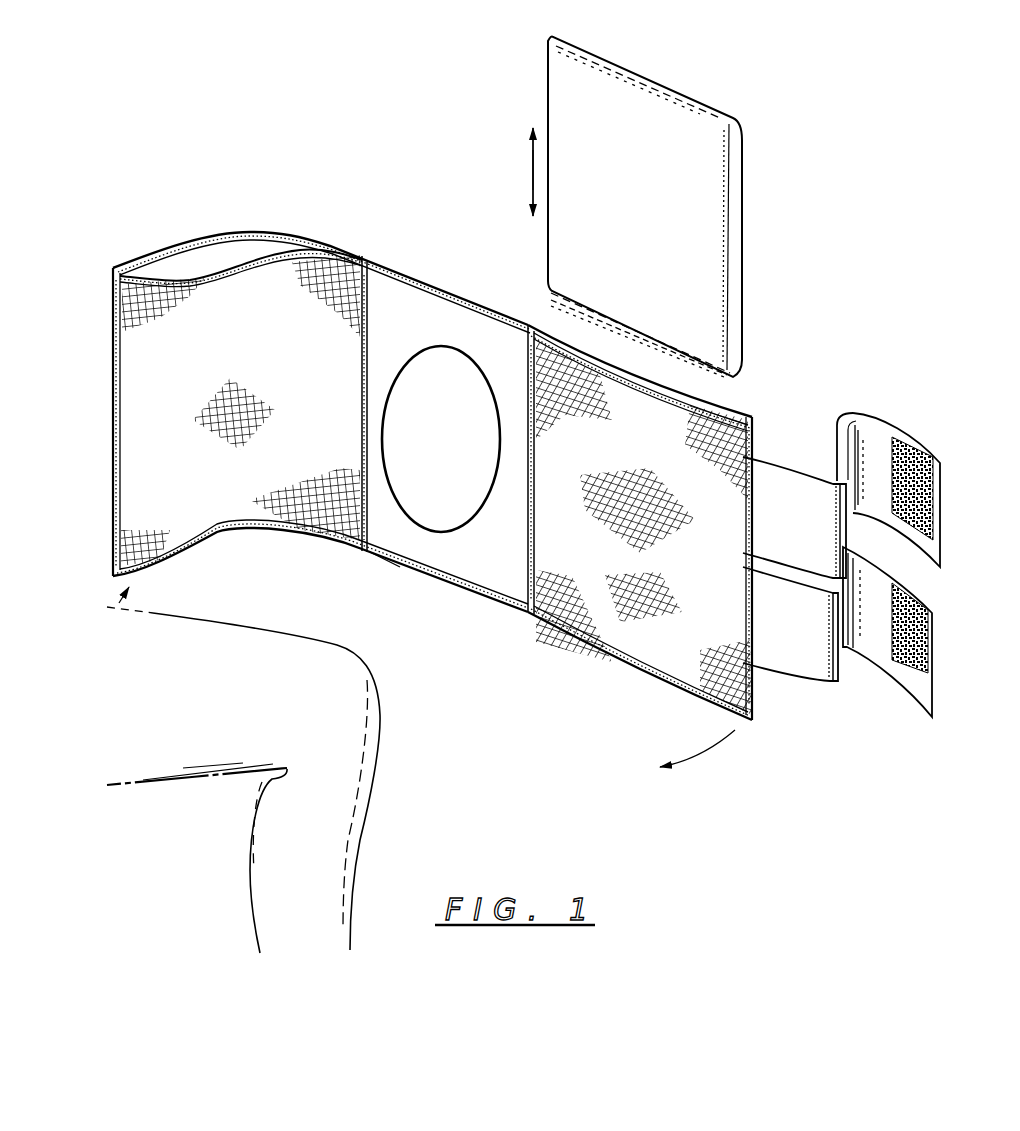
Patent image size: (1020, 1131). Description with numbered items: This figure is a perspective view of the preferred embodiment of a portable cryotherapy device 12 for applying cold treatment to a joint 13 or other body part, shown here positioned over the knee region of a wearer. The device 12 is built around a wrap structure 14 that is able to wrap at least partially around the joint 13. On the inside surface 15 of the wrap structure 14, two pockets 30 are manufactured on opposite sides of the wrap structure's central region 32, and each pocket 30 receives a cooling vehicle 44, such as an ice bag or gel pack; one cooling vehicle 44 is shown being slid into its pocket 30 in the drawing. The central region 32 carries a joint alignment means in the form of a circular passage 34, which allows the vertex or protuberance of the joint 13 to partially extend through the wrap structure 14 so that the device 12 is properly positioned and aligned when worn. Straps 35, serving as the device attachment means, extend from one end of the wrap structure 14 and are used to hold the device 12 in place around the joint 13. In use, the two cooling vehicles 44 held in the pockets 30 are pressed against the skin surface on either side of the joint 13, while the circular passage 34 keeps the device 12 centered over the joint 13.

The portable device 12 is at (225, 211).
The joint 13 is at (340, 784).
The wrap structure 14 is at (432, 270).
The inside surface 15 is at (483, 579).
The pockets 30 is at (270, 246).
The central region 32 is at (417, 553).
The circular passage 34 is at (463, 459).
The straps 35 is at (807, 546).
The cooling vehicle 44 is at (744, 144).